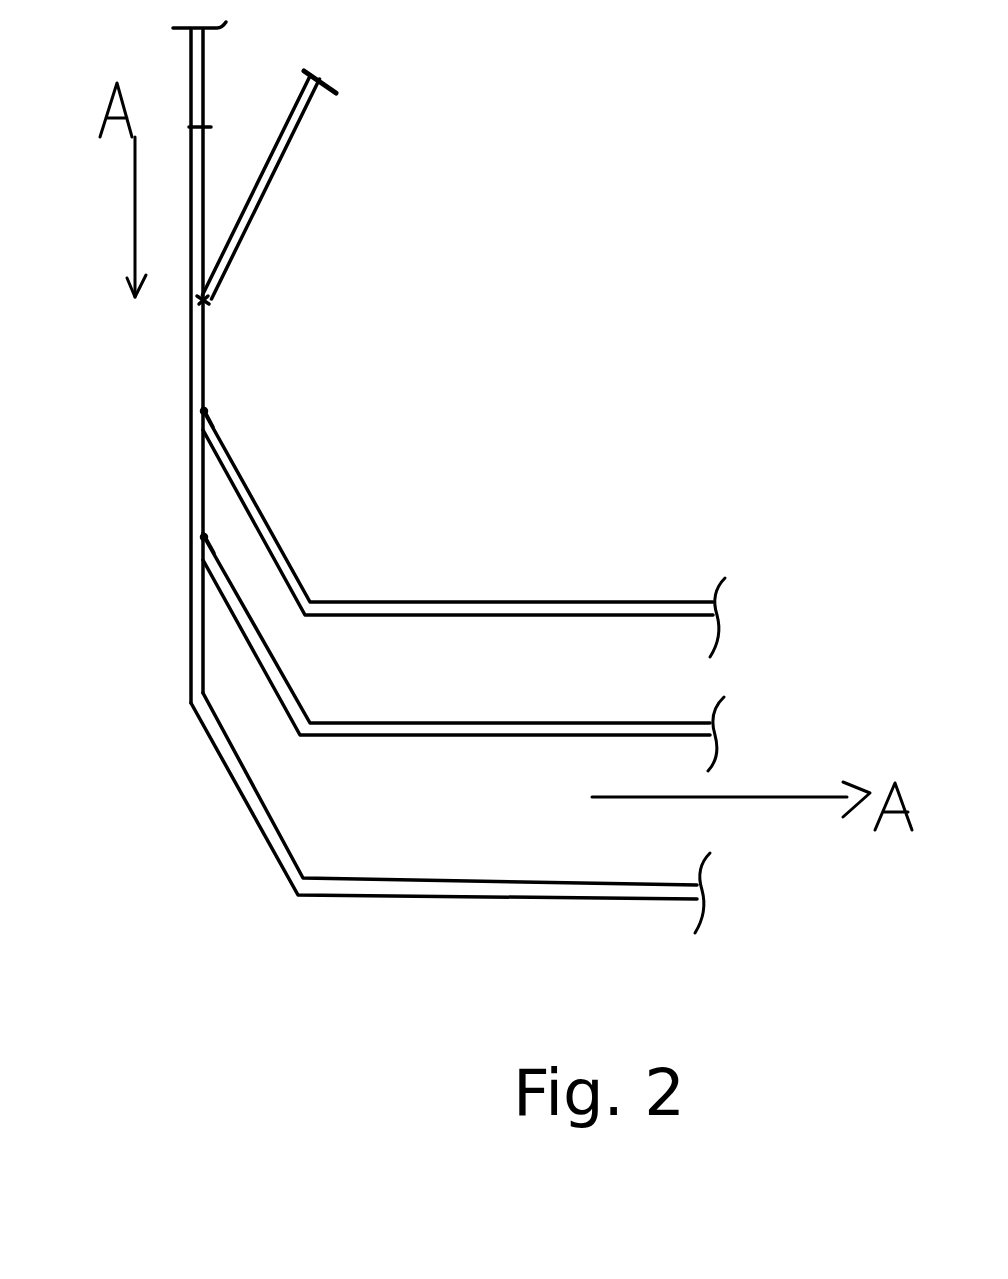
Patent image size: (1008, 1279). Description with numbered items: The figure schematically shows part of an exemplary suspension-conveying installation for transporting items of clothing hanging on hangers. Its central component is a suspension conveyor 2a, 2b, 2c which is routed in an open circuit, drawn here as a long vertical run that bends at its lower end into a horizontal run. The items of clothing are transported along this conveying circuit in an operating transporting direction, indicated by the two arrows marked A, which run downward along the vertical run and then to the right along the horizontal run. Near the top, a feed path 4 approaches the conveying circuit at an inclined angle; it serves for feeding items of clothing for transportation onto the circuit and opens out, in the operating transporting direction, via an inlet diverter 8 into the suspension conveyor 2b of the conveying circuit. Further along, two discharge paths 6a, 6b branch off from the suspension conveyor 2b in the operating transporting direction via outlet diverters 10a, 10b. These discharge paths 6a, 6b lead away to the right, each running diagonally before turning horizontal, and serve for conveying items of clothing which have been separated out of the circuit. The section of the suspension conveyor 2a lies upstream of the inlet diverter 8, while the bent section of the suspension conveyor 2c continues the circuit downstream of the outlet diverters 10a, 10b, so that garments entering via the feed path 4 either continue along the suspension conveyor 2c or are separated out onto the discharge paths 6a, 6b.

The suspension conveyor 2a is at (207, 127).
The suspension conveyor 2b is at (193, 370).
The suspension conveyor 2c is at (273, 840).
The feed path 4 is at (262, 193).
The inlet diverter 8 is at (205, 300).
The outlet diverter 10a is at (205, 410).
The outlet diverter 10b is at (207, 543).
The discharge path 6a is at (472, 608).
The discharge path 6b is at (485, 743).